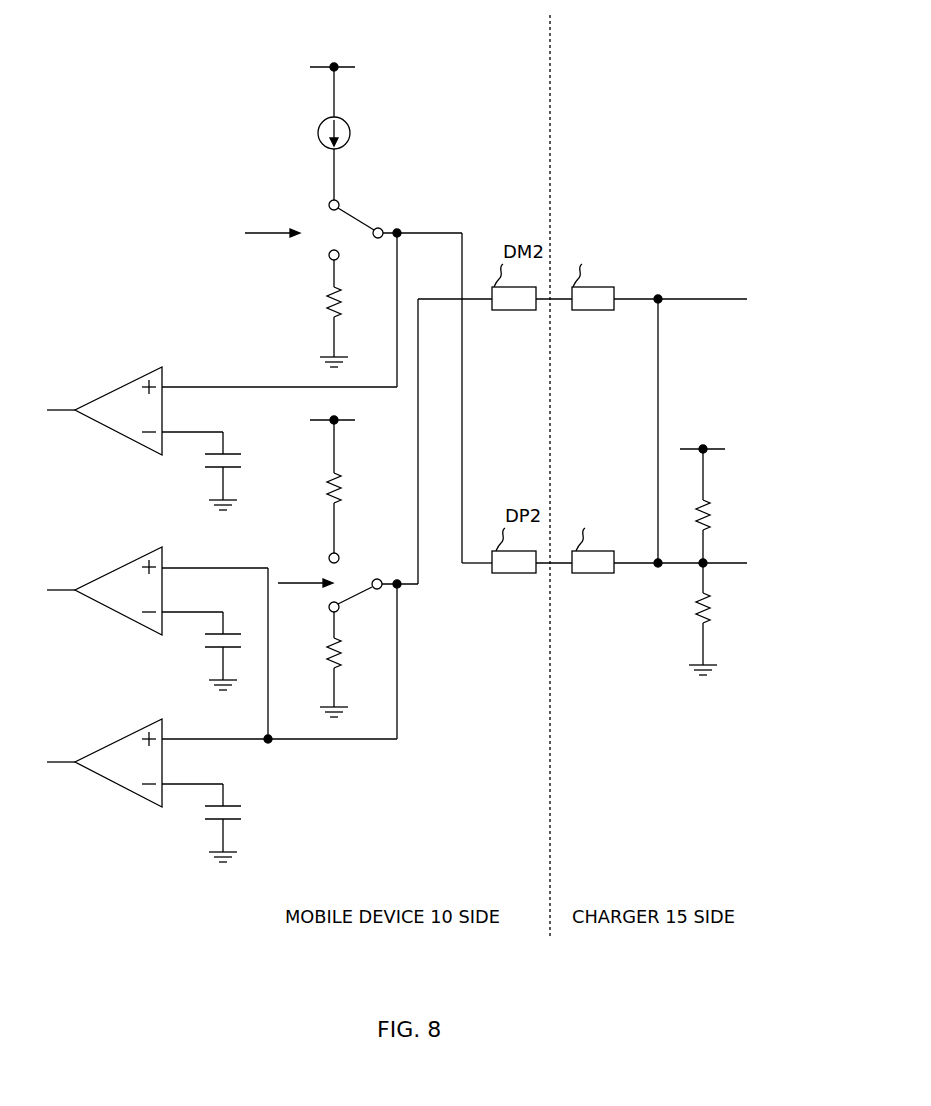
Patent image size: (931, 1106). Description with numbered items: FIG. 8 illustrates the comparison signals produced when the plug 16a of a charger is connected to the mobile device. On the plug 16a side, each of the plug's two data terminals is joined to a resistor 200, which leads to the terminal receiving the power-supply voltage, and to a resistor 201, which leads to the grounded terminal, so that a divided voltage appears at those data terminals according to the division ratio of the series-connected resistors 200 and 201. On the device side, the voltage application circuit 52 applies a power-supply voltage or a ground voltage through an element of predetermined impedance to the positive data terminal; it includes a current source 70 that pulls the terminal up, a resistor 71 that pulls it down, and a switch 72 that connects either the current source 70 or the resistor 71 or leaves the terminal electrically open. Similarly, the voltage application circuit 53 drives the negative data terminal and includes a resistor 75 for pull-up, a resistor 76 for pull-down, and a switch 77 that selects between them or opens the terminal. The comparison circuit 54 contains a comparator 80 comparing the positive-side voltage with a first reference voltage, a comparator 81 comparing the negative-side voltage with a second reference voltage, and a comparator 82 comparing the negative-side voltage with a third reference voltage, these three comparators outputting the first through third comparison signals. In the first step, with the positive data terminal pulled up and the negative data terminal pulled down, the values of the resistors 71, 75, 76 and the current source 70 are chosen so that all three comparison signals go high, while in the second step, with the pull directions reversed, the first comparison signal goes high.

The plug 16a is at (663, 59).
The voltage application circuit 52 is at (383, 156).
The voltage application circuit 53 is at (363, 496).
The comparison circuit 54 is at (136, 320).
The current source 70 is at (320, 122).
The resistor 71 is at (326, 288).
The switch 72 is at (381, 226).
The resistor 75 is at (328, 478).
The resistor 76 is at (340, 647).
The switch 77 is at (351, 583).
The comparator 80 is at (165, 365).
The comparator 81 is at (122, 630).
The comparator 82 is at (122, 800).
The resistor 200 is at (710, 509).
The resistor 201 is at (710, 622).